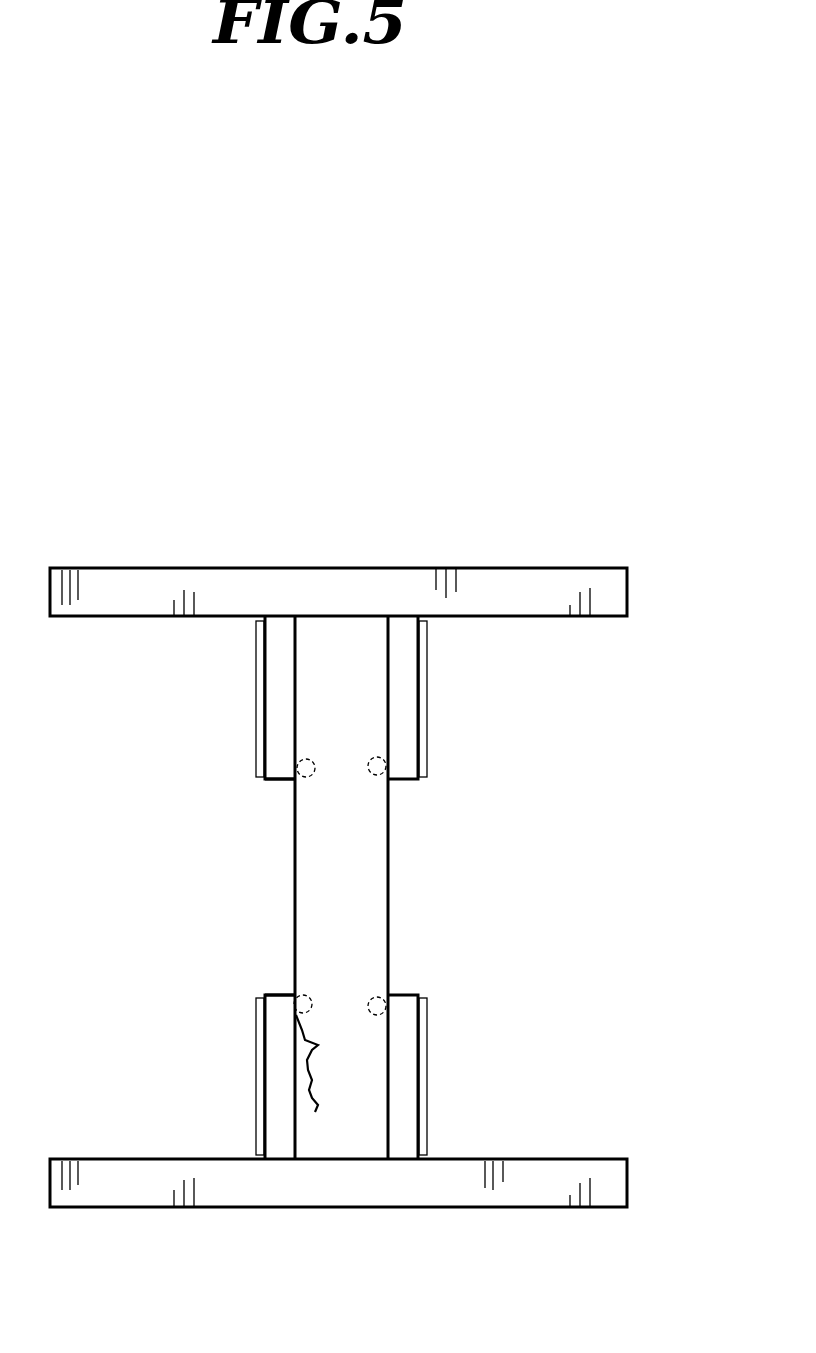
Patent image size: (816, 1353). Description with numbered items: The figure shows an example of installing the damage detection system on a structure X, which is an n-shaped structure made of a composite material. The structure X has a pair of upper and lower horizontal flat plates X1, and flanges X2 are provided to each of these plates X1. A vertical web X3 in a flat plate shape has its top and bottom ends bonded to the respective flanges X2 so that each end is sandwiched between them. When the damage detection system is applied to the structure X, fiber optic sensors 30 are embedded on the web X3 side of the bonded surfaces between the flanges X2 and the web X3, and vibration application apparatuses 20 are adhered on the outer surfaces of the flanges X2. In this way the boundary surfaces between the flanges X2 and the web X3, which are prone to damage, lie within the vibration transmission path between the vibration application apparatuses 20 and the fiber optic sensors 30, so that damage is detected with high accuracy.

The vibration application apparatus 20 is at (257, 690).
The fiber optic sensor 30 is at (370, 768).
The horizontal flat plate X1 is at (558, 616).
The flange X2 is at (281, 782).
The vertical web X3 is at (388, 830).
The structure X is at (668, 753).